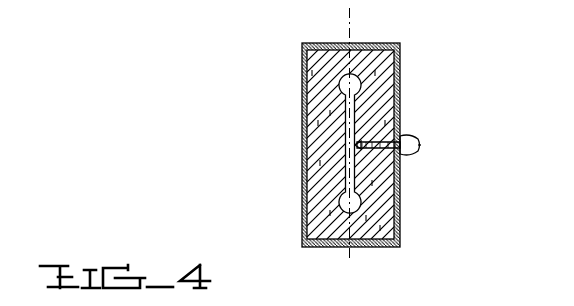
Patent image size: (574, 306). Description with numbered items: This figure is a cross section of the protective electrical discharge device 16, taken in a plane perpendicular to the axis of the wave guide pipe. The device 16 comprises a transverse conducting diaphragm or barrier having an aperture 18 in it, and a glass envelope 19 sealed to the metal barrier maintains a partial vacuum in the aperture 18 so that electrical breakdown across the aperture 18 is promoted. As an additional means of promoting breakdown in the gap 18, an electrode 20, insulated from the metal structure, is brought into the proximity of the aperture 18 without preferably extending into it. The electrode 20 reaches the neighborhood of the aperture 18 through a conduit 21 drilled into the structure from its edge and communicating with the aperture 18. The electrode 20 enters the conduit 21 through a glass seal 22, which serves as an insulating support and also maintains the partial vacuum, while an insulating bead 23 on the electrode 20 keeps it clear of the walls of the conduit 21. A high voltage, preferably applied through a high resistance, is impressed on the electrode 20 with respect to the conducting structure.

The protective electrical discharge device 16 is at (340, 154).
The aperture 18 is at (361, 80).
The glass envelope 19 is at (385, 44).
The electrode 20 is at (413, 135).
The conduit 21 is at (383, 130).
The glass seal 22 is at (414, 152).
The insulating bead 23 is at (364, 150).